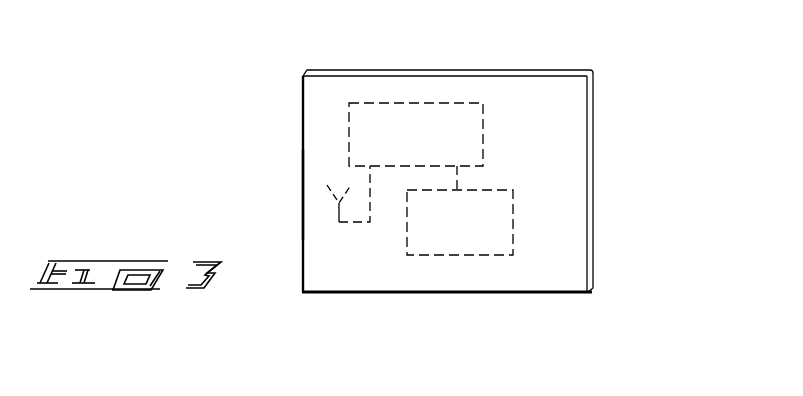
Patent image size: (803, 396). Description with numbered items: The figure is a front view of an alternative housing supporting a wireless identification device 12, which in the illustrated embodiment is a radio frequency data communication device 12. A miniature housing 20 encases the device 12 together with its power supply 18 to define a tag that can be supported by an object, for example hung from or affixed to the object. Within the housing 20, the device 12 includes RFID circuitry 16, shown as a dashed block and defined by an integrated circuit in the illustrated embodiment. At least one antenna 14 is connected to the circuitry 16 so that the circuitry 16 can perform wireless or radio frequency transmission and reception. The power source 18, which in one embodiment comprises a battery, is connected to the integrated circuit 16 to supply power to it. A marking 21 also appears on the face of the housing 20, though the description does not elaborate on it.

The radio frequency data communication device 12 is at (507, 78).
The antenna 14 is at (333, 182).
The RFID circuitry 16 is at (402, 101).
The power source 18 is at (430, 256).
The miniature housing 20 is at (303, 194).
The identification marking 21 is at (561, 272).